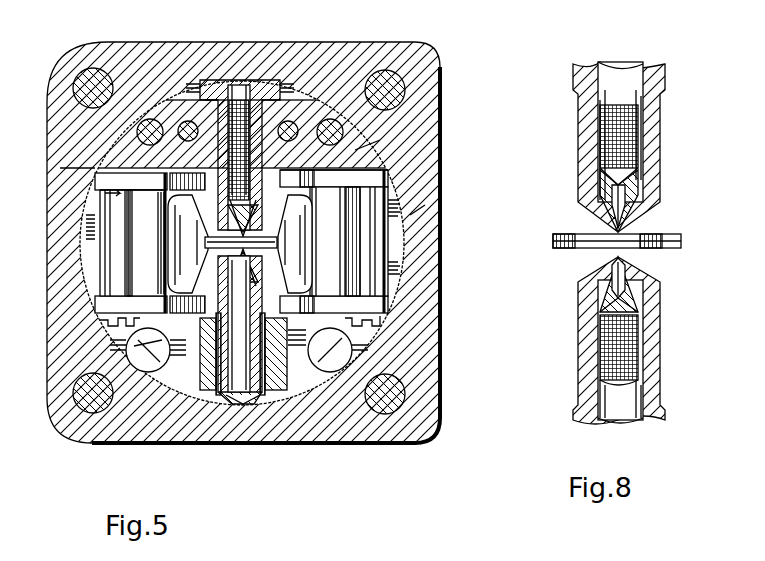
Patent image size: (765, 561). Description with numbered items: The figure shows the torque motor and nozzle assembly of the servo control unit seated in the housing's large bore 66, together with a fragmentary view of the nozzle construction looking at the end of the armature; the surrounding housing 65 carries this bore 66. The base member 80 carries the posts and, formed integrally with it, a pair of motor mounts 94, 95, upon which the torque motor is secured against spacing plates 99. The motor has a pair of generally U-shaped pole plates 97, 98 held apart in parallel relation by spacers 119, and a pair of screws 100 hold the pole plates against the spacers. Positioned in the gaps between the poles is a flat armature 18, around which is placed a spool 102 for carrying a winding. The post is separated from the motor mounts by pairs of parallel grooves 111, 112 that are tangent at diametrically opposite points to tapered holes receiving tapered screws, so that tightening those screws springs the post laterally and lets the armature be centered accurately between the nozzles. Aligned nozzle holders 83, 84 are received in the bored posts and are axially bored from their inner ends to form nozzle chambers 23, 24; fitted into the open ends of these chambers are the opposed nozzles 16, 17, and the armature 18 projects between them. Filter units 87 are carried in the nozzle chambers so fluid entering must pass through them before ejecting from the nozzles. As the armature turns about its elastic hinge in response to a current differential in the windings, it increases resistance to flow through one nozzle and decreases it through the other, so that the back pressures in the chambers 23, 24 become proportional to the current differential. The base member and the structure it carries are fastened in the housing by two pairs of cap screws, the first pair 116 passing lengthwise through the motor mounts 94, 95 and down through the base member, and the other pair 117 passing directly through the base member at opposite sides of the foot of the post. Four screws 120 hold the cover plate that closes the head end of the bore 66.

In FIG. 5, the nozzle 16 is at (254, 212).
In FIG. 8, the nozzle 16 is at (635, 195).
In FIG. 5, the nozzle 17 is at (236, 262).
In FIG. 8, the nozzle 17 is at (630, 282).
In FIG. 5, the armature 18 is at (268, 244).
In FIG. 8, the armature 18 is at (670, 244).
In FIG. 5, the nozzle chamber 23 is at (248, 80).
In FIG. 8, the nozzle chamber 23 is at (628, 93).
In FIG. 5, the nozzle chamber 24 is at (262, 396).
In FIG. 8, the nozzle chamber 24 is at (628, 400).
In FIG. 5, the housing block 65 is at (425, 205).
In FIG. 5, the large bore 66 is at (445, 267).
In FIG. 5, the base member 80 is at (198, 354).
In FIG. 5, the nozzle holder 83 is at (240, 82).
In FIG. 8, the nozzle holder 83 is at (652, 112).
In FIG. 5, the nozzle holder 84 is at (244, 400).
In FIG. 8, the nozzle holder 84 is at (652, 340).
In FIG. 5, the filter unit 87 is at (232, 322).
In FIG. 8, the filter unit 87 is at (620, 152).
In FIG. 5, the motor mount 94 is at (118, 141).
In FIG. 5, the motor mount 95 is at (380, 140).
In FIG. 5, the pole plate 97 is at (331, 241).
In FIG. 5, the pole plate 98 is at (334, 248).
In FIG. 5, the spacing plate 99 is at (60, 168).
In FIG. 5, the screw 100 is at (110, 245).
In FIG. 5, the spool 102 is at (188, 244).
In FIG. 5, the groove 111 is at (196, 85).
In FIG. 5, the groove 112 is at (195, 177).
In FIG. 5, the cap screw 116 is at (135, 177).
In FIG. 5, the cap screw 117 is at (340, 372).
In FIG. 5, the spacer 119 is at (380, 239).
In FIG. 5, the screw 120 is at (387, 93).